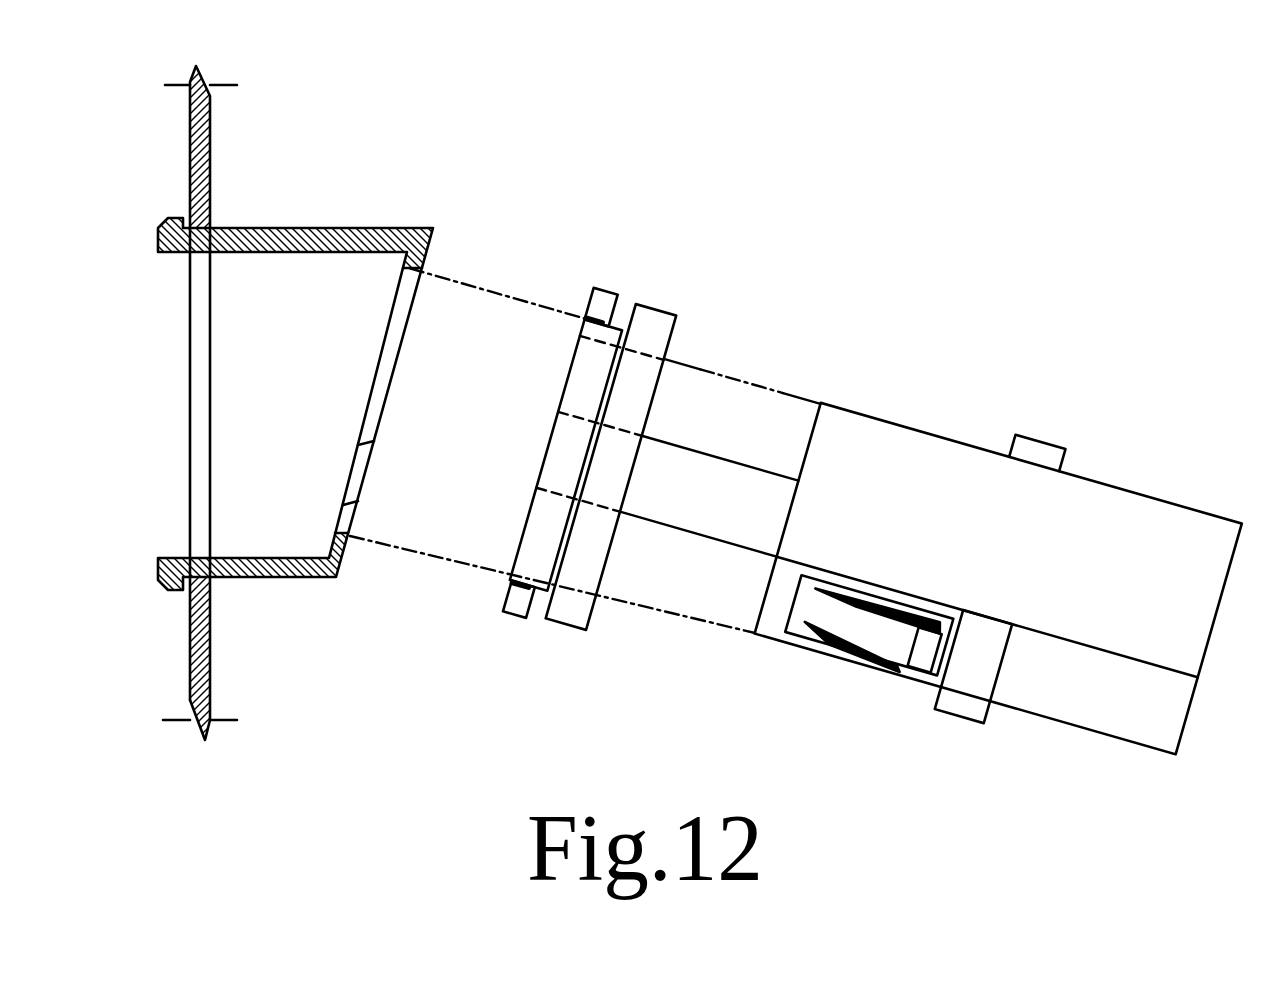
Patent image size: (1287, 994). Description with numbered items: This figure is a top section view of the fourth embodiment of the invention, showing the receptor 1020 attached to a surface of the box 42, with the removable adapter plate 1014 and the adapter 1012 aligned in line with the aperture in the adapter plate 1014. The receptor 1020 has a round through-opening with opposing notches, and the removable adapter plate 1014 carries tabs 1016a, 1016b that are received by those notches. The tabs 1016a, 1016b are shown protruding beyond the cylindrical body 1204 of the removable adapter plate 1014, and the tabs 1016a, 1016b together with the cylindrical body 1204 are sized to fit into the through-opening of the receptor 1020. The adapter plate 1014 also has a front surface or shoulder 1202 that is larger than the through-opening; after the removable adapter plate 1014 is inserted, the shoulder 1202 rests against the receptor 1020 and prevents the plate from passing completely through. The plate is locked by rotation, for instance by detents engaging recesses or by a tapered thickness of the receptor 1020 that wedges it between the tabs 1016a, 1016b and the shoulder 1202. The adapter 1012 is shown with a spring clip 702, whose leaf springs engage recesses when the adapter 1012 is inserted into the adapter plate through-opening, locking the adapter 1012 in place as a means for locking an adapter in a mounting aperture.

The box 42 is at (210, 143).
The receptor 1020 is at (348, 230).
The removable adapter plate 1014 is at (745, 278).
The tab 1016a is at (607, 289).
The tab 1016b is at (517, 622).
The cylindrical body 1204 is at (538, 596).
The shoulder 1202 is at (567, 631).
The adapter 1012 is at (1160, 498).
The spring clip 702 is at (917, 662).